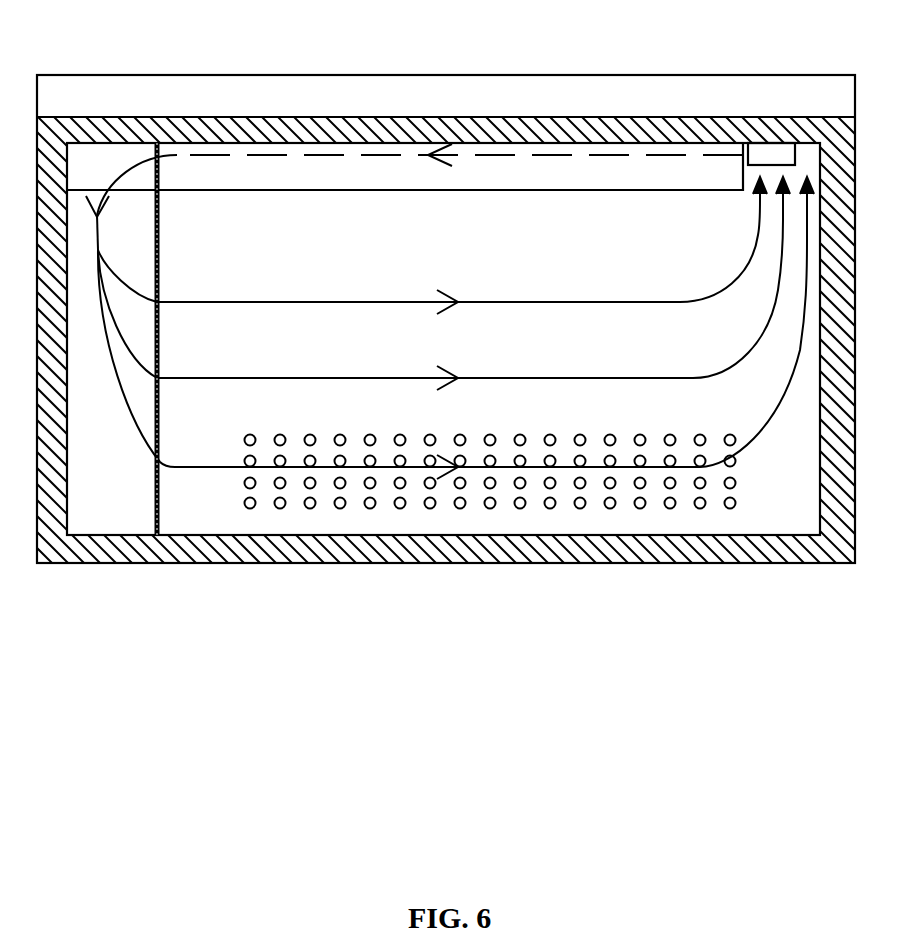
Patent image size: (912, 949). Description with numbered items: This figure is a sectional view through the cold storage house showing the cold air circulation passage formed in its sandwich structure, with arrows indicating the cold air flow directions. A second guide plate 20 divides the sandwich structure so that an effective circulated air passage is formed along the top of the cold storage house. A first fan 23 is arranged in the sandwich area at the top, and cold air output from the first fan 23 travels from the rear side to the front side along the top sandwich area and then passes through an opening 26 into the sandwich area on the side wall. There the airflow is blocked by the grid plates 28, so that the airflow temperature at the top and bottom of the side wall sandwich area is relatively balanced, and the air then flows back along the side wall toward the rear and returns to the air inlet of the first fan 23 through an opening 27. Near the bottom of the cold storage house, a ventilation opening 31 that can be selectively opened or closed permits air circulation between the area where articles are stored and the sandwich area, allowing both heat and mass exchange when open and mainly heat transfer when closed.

The second guide plate 20 is at (372, 180).
The first fan 23 is at (775, 158).
The opening 26 is at (92, 167).
The opening 27 is at (807, 163).
The grid plate 28 is at (159, 440).
The ventilation opening 31 is at (248, 506).